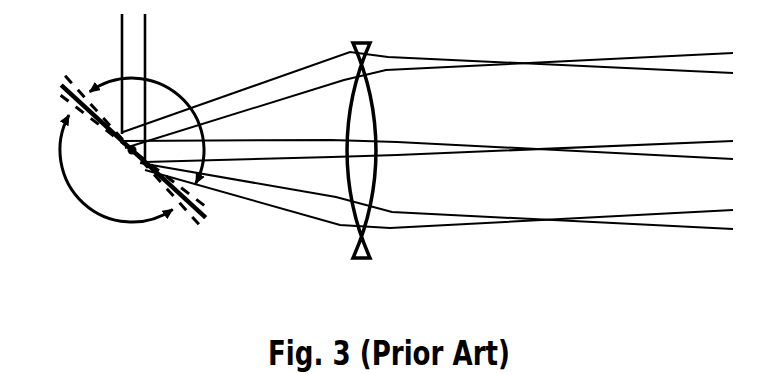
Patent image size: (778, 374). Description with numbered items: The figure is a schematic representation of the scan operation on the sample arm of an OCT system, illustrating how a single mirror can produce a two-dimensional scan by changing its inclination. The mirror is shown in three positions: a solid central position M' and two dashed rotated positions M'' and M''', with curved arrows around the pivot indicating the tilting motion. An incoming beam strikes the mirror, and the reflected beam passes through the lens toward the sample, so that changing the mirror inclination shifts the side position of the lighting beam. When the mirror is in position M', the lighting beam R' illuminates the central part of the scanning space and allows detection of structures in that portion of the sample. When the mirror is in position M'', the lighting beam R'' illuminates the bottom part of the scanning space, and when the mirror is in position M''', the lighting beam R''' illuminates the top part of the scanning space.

The mirror position M' is at (155, 168).
The mirror position M'' is at (131, 135).
The mirror position M''' is at (114, 153).
The lighting beam R' is at (427, 159).
The lighting beam R'' is at (436, 205).
The lighting beam R''' is at (428, 100).